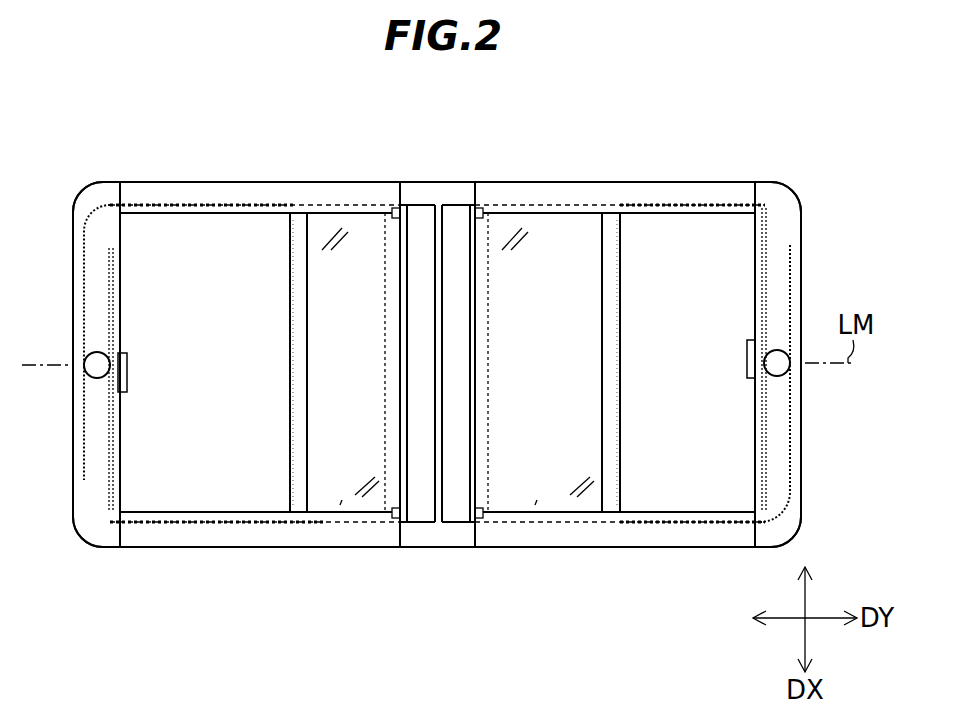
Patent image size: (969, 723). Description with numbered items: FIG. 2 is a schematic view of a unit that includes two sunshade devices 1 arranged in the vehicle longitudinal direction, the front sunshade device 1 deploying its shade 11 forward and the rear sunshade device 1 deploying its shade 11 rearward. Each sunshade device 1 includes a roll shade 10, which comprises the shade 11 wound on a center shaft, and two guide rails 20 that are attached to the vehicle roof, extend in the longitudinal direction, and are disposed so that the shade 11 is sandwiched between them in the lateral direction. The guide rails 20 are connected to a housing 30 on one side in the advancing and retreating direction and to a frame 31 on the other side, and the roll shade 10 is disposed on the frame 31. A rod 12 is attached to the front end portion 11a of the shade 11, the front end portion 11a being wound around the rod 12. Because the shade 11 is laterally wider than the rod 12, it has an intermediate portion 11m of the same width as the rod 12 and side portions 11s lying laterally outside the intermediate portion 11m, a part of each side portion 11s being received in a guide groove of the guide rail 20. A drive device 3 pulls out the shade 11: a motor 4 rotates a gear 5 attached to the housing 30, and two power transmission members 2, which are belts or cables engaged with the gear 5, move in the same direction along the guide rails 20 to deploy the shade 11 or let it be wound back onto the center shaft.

The sunshade device 1 is at (320, 160).
The power transmission member 2 is at (82, 287).
The drive device 3 is at (136, 395).
The motor 4 is at (128, 366).
The gear 5 is at (105, 352).
The roll shade 10 is at (282, 440).
The shade 11 is at (320, 505).
The front end portion 11a is at (289, 370).
The intermediate portion 11m is at (341, 500).
The side portion 11s is at (360, 205).
The rod 12 is at (291, 322).
The guide rail 20 is at (187, 181).
The housing 30 is at (100, 182).
The frame 31 is at (458, 181).